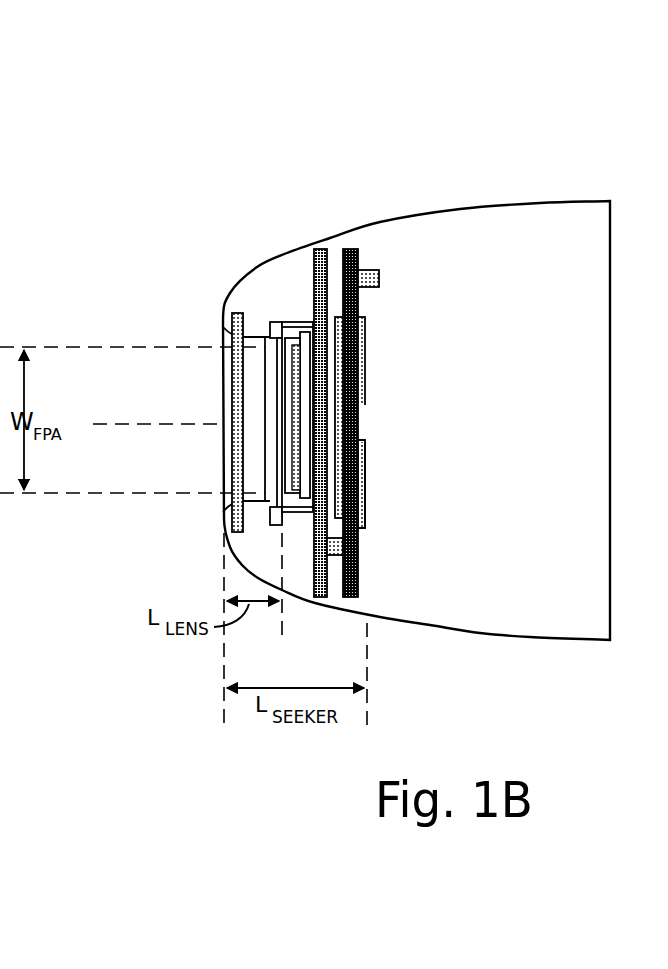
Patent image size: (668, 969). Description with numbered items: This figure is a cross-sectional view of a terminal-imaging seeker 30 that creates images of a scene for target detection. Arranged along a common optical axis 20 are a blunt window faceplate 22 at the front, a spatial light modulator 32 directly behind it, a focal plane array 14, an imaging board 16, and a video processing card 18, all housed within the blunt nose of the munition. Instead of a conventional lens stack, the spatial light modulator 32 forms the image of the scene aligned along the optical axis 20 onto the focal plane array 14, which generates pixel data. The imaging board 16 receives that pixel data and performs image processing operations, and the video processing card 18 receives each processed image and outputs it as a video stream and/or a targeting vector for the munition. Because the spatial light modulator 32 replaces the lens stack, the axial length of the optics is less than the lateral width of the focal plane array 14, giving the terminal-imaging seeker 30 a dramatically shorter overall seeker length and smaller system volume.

The terminal-imaging seeker 30 is at (445, 140).
The imaging board 16 is at (315, 249).
The video processing card 18 is at (364, 565).
The focal plane array 14 is at (310, 417).
The blunt window faceplate 22 is at (225, 376).
The spatial light modulator 32 is at (277, 320).
The optical axis 20 is at (162, 426).